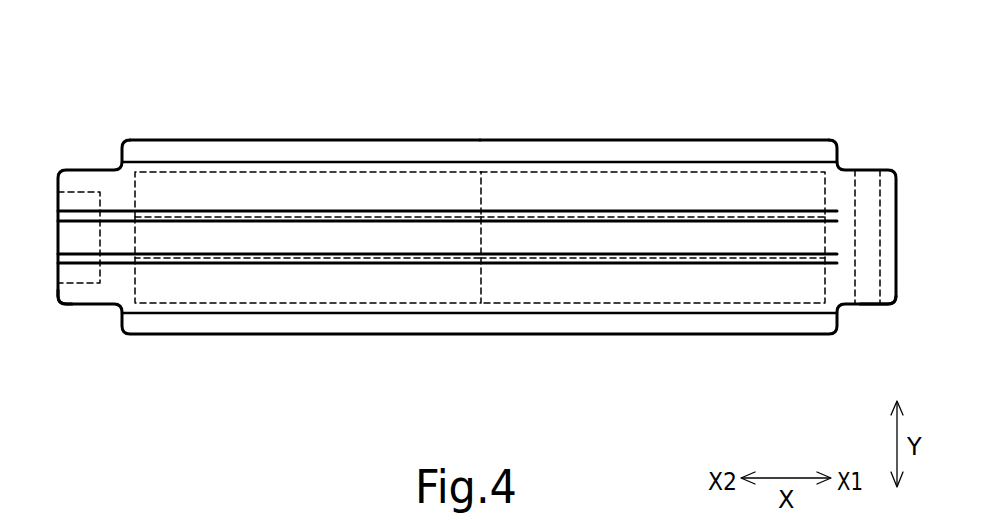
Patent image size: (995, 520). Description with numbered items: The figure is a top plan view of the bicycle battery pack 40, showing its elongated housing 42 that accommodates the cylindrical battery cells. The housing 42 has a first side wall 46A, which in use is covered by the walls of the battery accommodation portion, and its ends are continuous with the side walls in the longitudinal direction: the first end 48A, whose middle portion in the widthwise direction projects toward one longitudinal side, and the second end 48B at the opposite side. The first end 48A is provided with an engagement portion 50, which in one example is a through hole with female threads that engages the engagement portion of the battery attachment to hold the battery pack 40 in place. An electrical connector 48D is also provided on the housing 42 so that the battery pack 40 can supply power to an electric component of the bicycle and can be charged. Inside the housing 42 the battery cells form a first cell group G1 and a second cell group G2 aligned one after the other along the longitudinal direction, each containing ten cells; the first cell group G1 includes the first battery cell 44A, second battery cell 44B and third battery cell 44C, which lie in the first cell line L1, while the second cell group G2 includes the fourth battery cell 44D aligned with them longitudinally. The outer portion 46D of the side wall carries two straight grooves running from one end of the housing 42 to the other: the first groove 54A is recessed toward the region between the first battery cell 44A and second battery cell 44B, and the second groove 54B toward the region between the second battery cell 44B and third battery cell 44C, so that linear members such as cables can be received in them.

The battery pack 40 is at (764, 80).
The housing 42 is at (733, 148).
The first battery cell 44A is at (380, 303).
The second battery cell 44B is at (215, 260).
The third battery cell 44C is at (377, 170).
The fourth battery cell 44D is at (713, 302).
The first side wall 46A is at (548, 188).
The outer portion 46D is at (565, 292).
The first end 48A is at (868, 182).
The second end 48B is at (78, 184).
The electrical connector 48D is at (62, 275).
The engagement portion 50 is at (878, 292).
The first groove 54A is at (832, 256).
The second groove 54B is at (832, 214).
The first cell line L1 is at (227, 158).
The first cell group G1 is at (305, 136).
The second cell group G2 is at (658, 136).